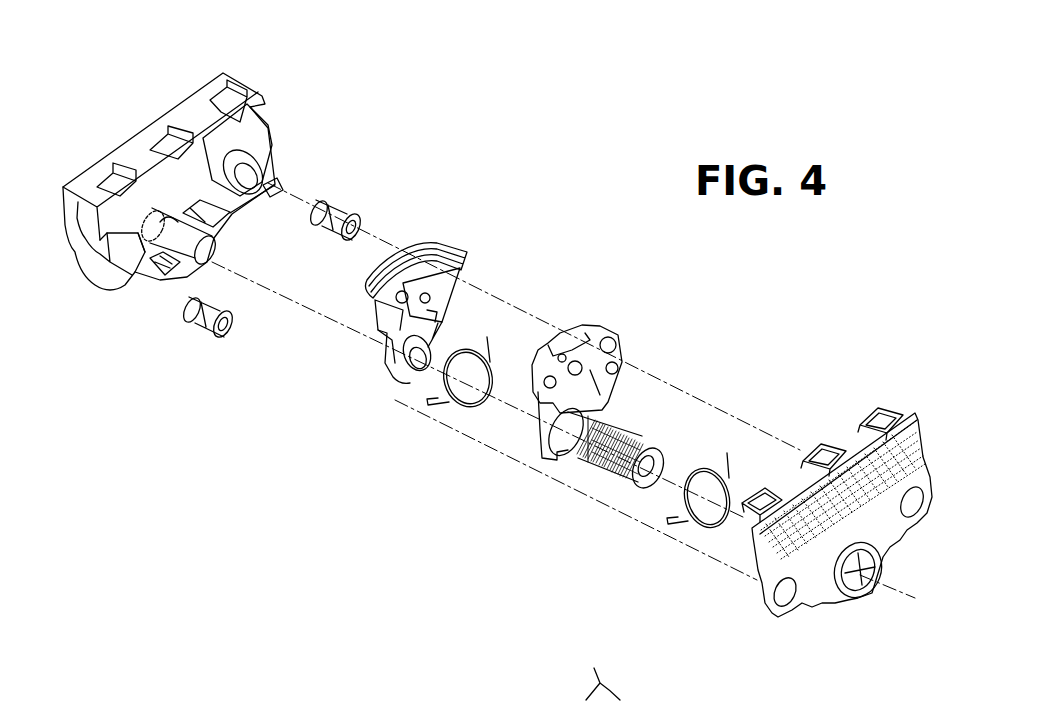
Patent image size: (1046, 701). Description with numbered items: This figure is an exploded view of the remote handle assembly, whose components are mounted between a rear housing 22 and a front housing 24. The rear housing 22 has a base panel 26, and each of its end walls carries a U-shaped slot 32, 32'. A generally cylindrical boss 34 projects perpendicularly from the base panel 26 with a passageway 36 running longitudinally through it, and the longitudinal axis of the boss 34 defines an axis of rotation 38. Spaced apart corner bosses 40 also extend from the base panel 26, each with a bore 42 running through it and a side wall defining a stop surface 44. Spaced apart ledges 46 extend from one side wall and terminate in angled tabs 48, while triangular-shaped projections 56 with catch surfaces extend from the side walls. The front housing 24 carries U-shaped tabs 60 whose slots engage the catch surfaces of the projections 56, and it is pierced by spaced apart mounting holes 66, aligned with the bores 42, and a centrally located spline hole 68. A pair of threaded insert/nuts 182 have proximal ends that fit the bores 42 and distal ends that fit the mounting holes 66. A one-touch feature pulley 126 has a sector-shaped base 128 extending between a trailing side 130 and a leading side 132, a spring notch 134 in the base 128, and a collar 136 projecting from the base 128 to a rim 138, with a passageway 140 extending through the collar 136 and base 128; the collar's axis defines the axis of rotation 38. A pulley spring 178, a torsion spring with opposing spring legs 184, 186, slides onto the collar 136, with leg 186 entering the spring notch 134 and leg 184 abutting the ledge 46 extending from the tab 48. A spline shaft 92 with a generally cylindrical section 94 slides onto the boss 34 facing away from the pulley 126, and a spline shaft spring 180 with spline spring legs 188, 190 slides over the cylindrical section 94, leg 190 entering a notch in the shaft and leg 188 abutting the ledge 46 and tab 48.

The rear housing 22 is at (97, 292).
The front housing 24 is at (914, 528).
The base panel 26 is at (169, 181).
The U-shaped slot 32 is at (72, 293).
The U-shaped slot 32' is at (273, 109).
The cylindrical boss 34 is at (157, 217).
The passageway 36 is at (217, 250).
The axis of rotation 38 is at (887, 600).
The corner boss 40 is at (232, 152).
The bore 42 is at (265, 174).
The stop surface 44 is at (210, 168).
The ledge 46 is at (167, 227).
The tab 48 is at (272, 188).
The triangular-shaped projection 56 is at (110, 178).
The U-shaped tab 60 is at (887, 407).
The mounting hole 66 is at (915, 500).
The spline hole 68 is at (873, 571).
The spline shaft 92 is at (627, 427).
The cylindrical section 94 is at (560, 442).
The one-touch feature (OTF) pulley 126 is at (458, 243).
The base 128 is at (463, 285).
The trailing side 130 is at (461, 316).
The leading side 132 is at (392, 340).
The spring notch 134 is at (432, 307).
The collar 136 is at (400, 370).
The rim 138 is at (410, 365).
The passageway 140 is at (443, 327).
The pulley spring 178 is at (448, 417).
The spline shaft spring 180 is at (687, 530).
The threaded insert/nut 182 is at (350, 207).
The spring leg 184 is at (440, 400).
The spring leg 186 is at (490, 338).
The spline spring leg 188 is at (665, 521).
The spline spring leg 190 is at (729, 455).